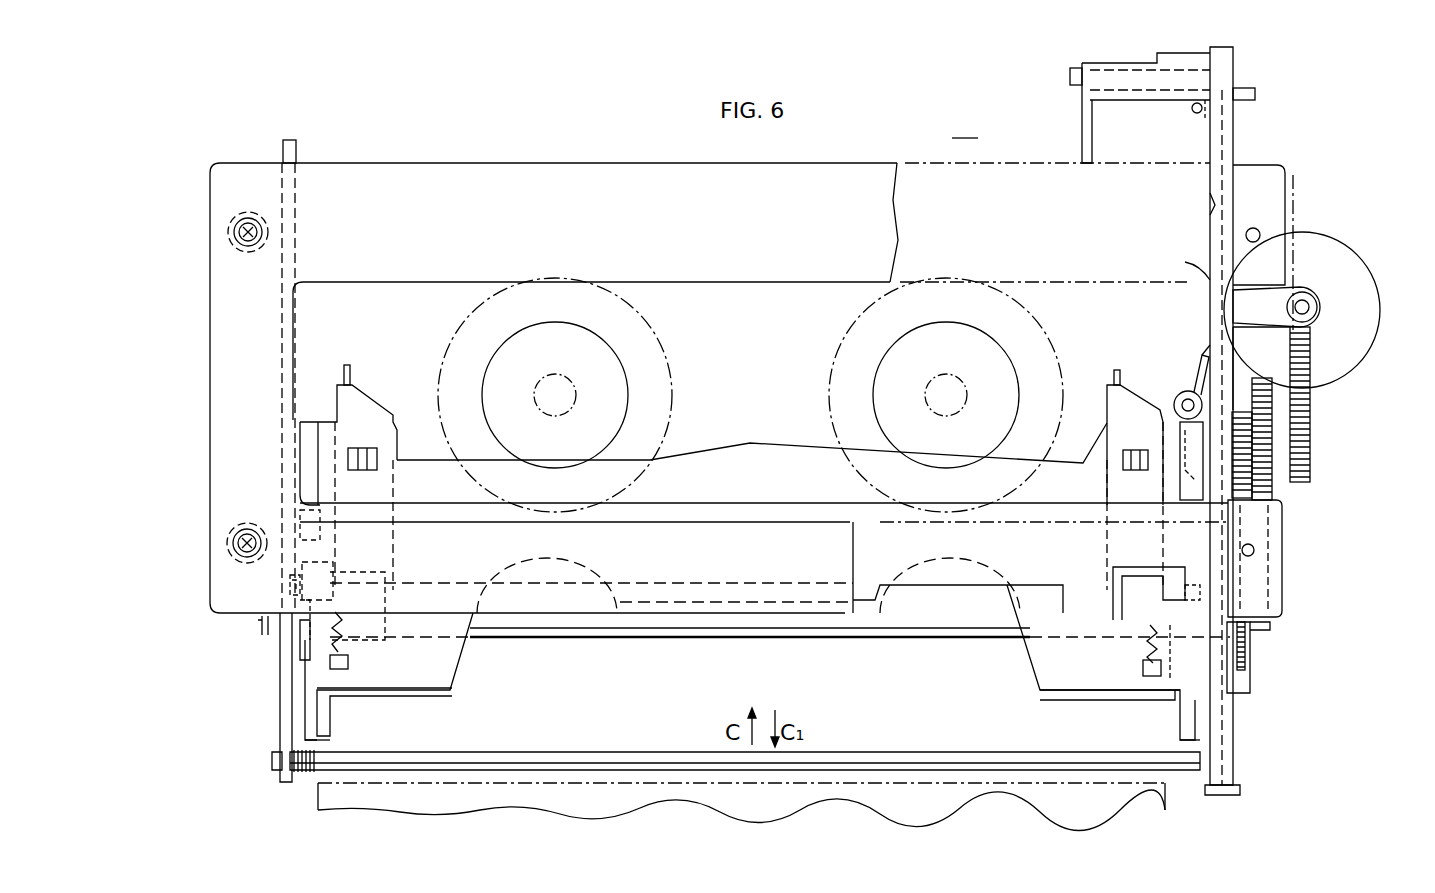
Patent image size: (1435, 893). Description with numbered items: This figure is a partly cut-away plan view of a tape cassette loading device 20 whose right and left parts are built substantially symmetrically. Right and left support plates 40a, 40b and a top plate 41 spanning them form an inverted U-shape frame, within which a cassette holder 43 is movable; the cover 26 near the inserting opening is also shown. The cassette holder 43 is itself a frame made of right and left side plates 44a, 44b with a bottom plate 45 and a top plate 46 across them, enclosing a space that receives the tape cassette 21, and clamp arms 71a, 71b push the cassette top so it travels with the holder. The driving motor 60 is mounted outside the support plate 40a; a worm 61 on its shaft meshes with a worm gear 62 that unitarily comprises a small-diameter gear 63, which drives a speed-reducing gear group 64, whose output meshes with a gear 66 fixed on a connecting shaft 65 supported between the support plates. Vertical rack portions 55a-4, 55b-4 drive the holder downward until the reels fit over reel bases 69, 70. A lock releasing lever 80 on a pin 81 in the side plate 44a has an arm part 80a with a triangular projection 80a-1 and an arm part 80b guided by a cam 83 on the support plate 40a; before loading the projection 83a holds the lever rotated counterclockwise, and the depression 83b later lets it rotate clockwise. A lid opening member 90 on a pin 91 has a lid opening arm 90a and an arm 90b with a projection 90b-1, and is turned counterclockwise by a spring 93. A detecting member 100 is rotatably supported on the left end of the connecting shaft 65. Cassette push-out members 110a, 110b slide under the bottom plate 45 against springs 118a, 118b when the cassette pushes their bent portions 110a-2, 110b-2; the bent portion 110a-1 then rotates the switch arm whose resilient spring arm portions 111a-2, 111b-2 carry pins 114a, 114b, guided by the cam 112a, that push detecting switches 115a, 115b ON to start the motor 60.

The tape cassette loading device 20 is at (966, 126).
The tape cassette 21 is at (865, 790).
The cover 26 is at (655, 752).
The right support plate 40a is at (1233, 70).
The left support plate 40b is at (283, 150).
The top plate 41 is at (703, 163).
The cassette holder 43 is at (766, 440).
The right side plate 44a is at (1180, 720).
The left side plate 44b is at (317, 716).
The bottom plate 45 is at (1025, 662).
The top plate 46 is at (897, 628).
The vertical rack portion 55a-4 is at (1185, 742).
The vertical rack portion 55b-4 is at (320, 748).
The driving motor 60 is at (1322, 240).
The worm 61 is at (1318, 315).
The worm gear 62 is at (1310, 348).
The small-diameter gear 63 is at (1262, 378).
The speed-reducing gear group 64 is at (1272, 628).
The connecting shaft 65 is at (933, 640).
The gear 66 is at (1250, 680).
The reel base 69 is at (657, 350).
The reel base 70 is at (855, 333).
The clamp arm 71a is at (1135, 580).
The clamp arm 71b is at (380, 582).
The lock releasing lever 80 is at (1196, 380).
The arm part 80a is at (1180, 435).
The triangular projection 80a-1 is at (1180, 480).
The arm part 80b is at (1203, 355).
The pin 81 is at (1175, 398).
The cam 83 is at (1128, 197).
The projection 83a is at (1210, 278).
The depression 83b is at (1210, 198).
The lid opening member 90 is at (1125, 100).
The lid opening arm 90a is at (1082, 150).
The arm 90b is at (1205, 125).
The projection 90b-1 is at (1255, 95).
The pin 91 is at (1070, 80).
The spring 93 is at (1193, 113).
The detecting member 100 is at (400, 640).
The cassette push-out member 110a is at (1107, 402).
The bent portion 110a-1 is at (1255, 553).
The bent portion 110a-2 is at (1116, 370).
The cassette push-out member 110b is at (380, 403).
The bent portion 110b-2 is at (347, 365).
The resilient spring arm portion 111a-2 is at (1200, 590).
The resilient spring arm portion 111b-2 is at (318, 540).
The cam 112a is at (1250, 518).
The pin 114a is at (1248, 648).
The pin 114b is at (290, 588).
The detecting switch 115a is at (1165, 678).
The detecting switch 115b is at (275, 657).
The spring 118a is at (1148, 652).
The spring 118b is at (345, 662).